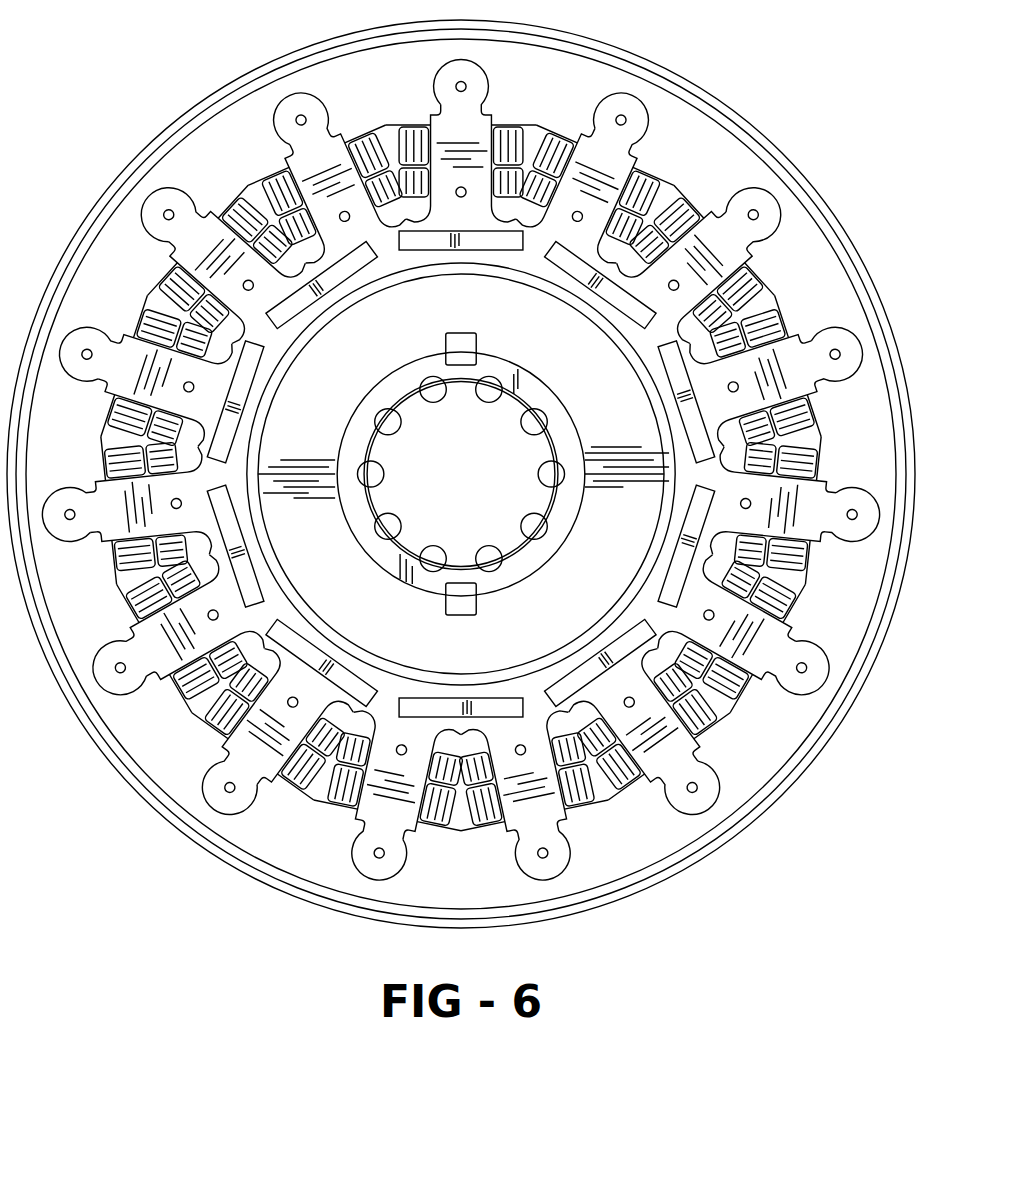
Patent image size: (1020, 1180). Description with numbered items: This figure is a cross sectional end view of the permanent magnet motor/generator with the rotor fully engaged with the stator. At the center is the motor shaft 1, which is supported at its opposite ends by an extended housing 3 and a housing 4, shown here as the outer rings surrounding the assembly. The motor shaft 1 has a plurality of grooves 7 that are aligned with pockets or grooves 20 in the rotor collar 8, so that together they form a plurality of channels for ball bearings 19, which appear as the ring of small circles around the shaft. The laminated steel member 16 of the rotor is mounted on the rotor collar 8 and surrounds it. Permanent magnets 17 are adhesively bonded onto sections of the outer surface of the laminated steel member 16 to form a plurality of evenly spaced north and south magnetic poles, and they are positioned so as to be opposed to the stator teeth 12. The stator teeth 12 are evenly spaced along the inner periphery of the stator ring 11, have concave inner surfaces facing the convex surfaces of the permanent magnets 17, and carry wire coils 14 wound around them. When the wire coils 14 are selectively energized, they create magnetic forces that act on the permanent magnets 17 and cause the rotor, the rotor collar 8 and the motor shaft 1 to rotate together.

The motor shaft 1 is at (489, 424).
The extended housing 3 is at (883, 303).
The housing 4 is at (883, 303).
The grooves 7 is at (536, 474).
The rotor collar 8 is at (557, 433).
The stator ring 11 is at (783, 257).
The stator teeth 12 is at (757, 193).
The wire coils 14 is at (678, 181).
The laminated steel member 16 is at (502, 637).
The permanent magnets 17 is at (443, 699).
The ball bearings 19 is at (561, 471).
The pockets or grooves 20 is at (559, 489).